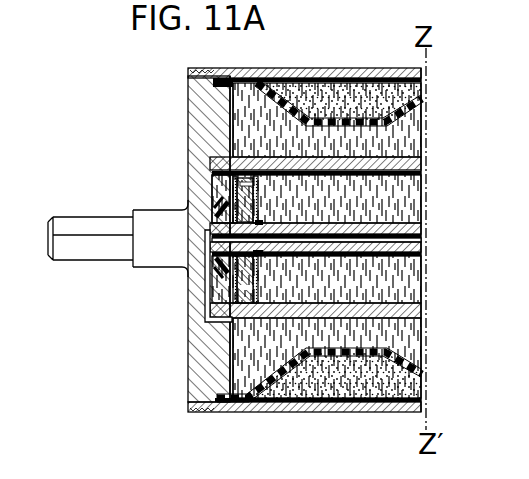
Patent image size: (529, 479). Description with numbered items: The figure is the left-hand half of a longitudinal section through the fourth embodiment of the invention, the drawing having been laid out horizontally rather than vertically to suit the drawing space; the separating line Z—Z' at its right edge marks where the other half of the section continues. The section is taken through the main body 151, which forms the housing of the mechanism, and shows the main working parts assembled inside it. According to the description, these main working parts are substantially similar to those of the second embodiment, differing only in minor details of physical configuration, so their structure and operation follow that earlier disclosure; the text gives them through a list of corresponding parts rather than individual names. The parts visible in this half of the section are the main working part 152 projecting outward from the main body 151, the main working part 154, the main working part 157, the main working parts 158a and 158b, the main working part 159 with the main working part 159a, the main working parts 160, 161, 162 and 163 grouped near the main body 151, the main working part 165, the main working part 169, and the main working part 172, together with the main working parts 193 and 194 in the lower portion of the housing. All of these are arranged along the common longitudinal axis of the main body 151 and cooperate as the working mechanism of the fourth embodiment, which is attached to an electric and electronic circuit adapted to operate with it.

The main body 151 is at (284, 76).
The main working part 152 is at (93, 232).
The main working part 154 is at (345, 173).
The main working part 157 is at (247, 203).
The main working part 158a is at (244, 318).
The main working part 158b is at (238, 183).
The main working part 159 is at (372, 213).
The main working part 159a is at (213, 212).
The main working part 160 is at (250, 258).
The main working part 161 is at (213, 182).
The main working part 162 is at (260, 220).
The main working part 163 is at (226, 265).
The main working part 165 is at (240, 358).
The main working part 169 is at (290, 240).
The main working part 172 is at (360, 278).
The main working part 193 is at (312, 388).
The main working part 194 is at (372, 352).